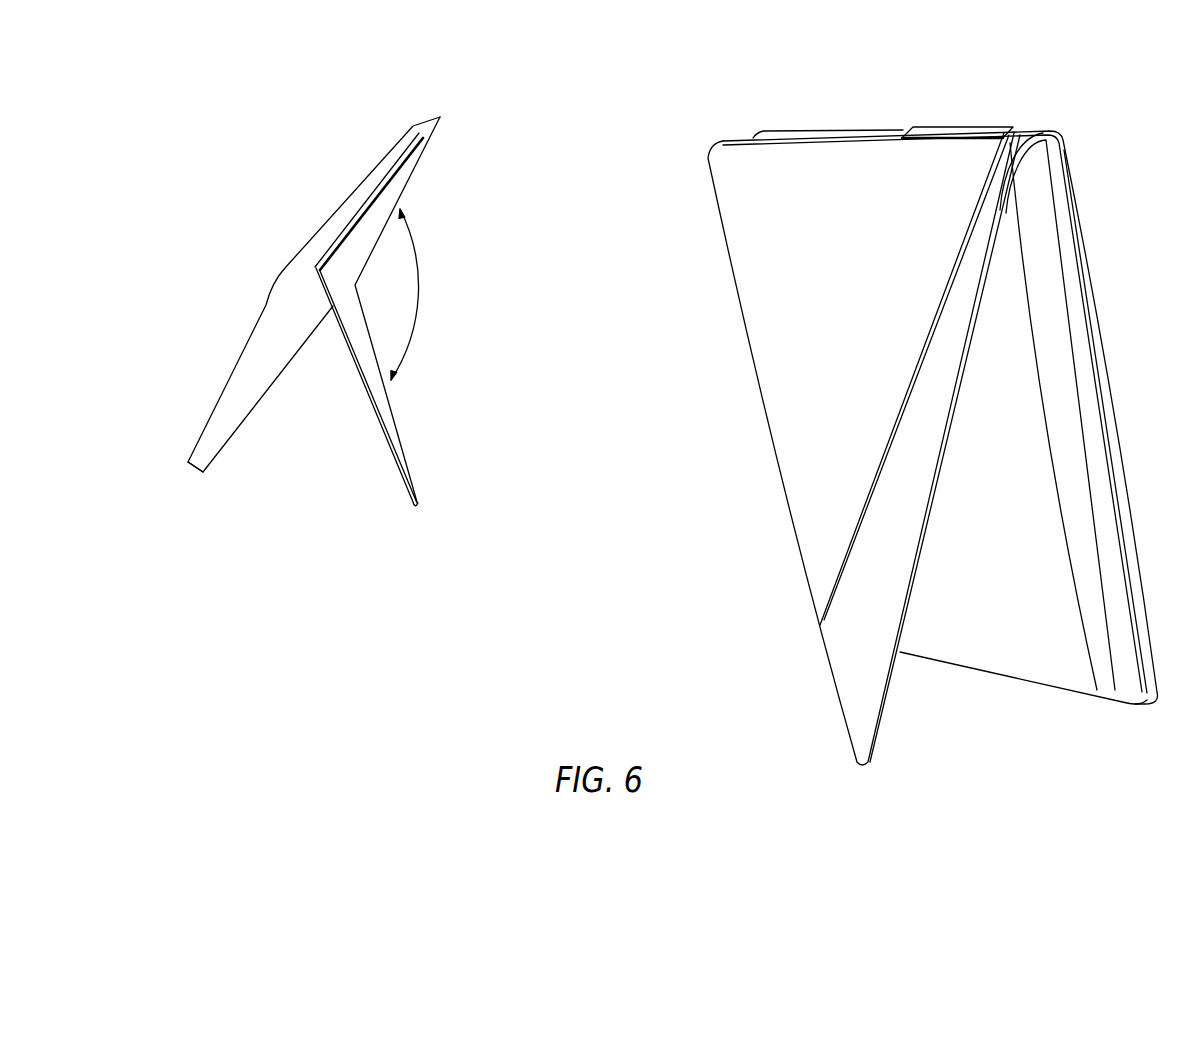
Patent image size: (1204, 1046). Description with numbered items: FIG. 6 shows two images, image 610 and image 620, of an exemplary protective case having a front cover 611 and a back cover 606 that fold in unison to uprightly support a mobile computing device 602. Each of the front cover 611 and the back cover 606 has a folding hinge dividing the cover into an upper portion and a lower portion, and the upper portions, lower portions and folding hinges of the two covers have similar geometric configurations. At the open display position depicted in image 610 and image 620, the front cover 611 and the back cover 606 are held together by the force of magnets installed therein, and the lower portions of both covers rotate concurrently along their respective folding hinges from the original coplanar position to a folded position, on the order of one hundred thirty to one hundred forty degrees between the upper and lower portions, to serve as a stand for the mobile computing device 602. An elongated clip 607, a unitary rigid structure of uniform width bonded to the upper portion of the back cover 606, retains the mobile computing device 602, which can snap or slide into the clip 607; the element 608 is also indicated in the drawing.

The image 610 is at (270, 219).
The elongated clip 607 is at (232, 388).
The front cover 611 is at (383, 412).
The back cover 606 is at (388, 448).
The mobile computing device 602 is at (203, 466).
The image 620 is at (753, 123).
The front flap 608 is at (940, 298).